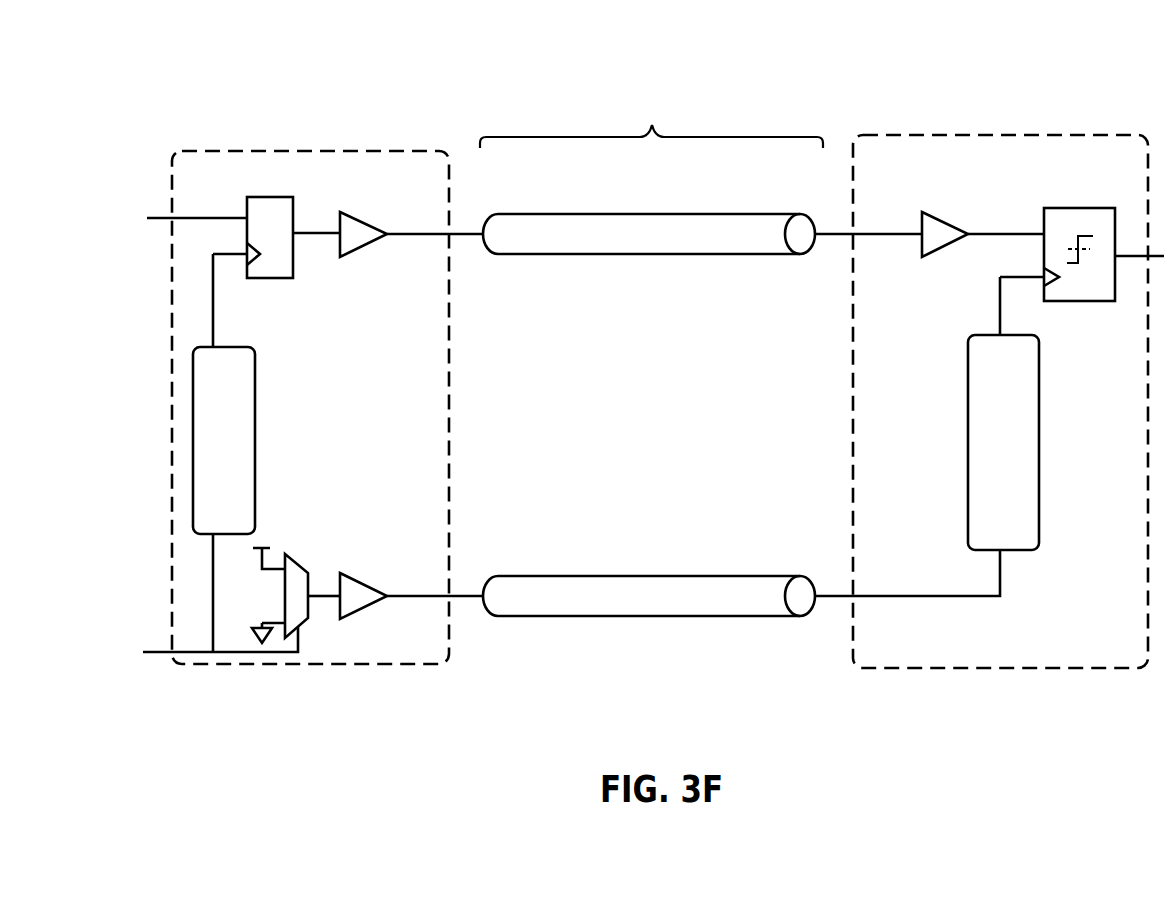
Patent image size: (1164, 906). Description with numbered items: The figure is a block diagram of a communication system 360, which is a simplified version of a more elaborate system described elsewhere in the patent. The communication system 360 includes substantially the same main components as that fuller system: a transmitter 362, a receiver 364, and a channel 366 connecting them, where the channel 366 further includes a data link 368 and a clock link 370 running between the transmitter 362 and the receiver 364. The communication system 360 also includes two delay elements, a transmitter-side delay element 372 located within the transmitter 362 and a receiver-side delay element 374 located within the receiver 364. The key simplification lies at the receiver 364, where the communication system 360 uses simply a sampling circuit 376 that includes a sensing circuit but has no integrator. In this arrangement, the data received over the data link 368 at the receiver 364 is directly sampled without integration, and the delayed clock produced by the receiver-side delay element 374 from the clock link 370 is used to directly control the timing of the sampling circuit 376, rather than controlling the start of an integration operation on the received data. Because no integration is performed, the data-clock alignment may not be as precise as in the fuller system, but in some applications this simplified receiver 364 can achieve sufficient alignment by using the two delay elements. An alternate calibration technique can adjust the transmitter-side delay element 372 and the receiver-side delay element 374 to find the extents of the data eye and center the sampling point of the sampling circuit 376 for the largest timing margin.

The communication system 360 is at (792, 38).
The transmitter 362 is at (313, 387).
The receiver 364 is at (989, 386).
The channel 366 is at (651, 354).
The data link 368 is at (649, 234).
The clock link 370 is at (649, 596).
The transmitter-side delay element 372 is at (224, 440).
The receiver-side delay element 374 is at (1003, 442).
The sampling circuit 376 is at (1115, 208).